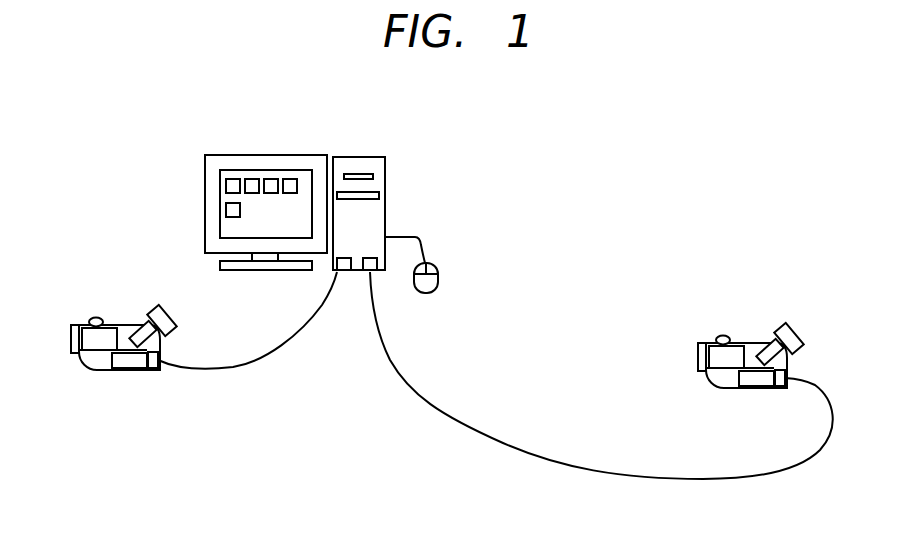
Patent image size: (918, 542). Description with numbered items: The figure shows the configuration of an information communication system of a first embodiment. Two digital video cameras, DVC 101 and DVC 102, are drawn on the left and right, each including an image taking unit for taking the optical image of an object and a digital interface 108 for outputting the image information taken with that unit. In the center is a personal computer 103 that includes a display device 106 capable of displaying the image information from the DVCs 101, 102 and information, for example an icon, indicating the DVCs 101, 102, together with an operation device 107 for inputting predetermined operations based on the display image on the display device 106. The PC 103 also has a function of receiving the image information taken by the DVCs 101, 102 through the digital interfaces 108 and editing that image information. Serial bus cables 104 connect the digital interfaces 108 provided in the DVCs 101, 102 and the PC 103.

The digital video camera (DVC) 101 is at (160, 308).
The digital video camera (DVC) 102 is at (787, 325).
The personal computer (PC) 103 is at (370, 155).
The serial bus cable 104 is at (220, 367).
The display device 106 is at (292, 153).
The operation device 107 is at (438, 272).
The digital interface 108 is at (378, 273).